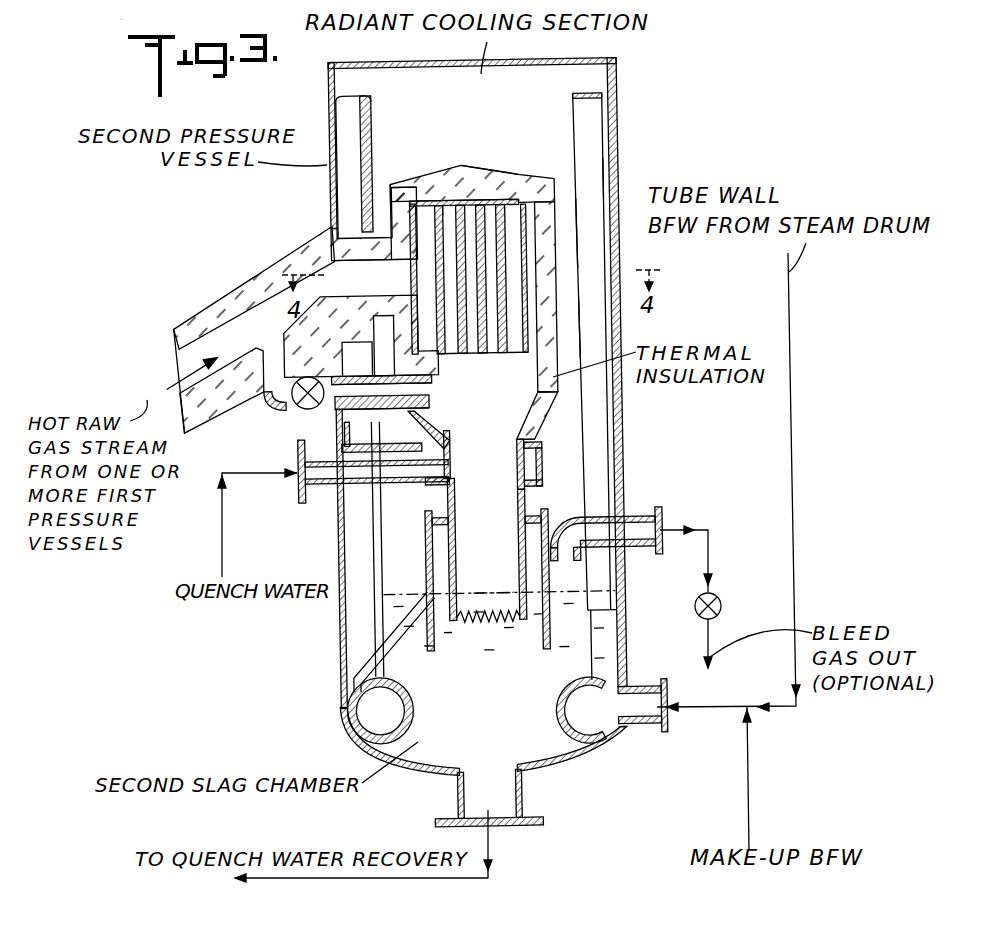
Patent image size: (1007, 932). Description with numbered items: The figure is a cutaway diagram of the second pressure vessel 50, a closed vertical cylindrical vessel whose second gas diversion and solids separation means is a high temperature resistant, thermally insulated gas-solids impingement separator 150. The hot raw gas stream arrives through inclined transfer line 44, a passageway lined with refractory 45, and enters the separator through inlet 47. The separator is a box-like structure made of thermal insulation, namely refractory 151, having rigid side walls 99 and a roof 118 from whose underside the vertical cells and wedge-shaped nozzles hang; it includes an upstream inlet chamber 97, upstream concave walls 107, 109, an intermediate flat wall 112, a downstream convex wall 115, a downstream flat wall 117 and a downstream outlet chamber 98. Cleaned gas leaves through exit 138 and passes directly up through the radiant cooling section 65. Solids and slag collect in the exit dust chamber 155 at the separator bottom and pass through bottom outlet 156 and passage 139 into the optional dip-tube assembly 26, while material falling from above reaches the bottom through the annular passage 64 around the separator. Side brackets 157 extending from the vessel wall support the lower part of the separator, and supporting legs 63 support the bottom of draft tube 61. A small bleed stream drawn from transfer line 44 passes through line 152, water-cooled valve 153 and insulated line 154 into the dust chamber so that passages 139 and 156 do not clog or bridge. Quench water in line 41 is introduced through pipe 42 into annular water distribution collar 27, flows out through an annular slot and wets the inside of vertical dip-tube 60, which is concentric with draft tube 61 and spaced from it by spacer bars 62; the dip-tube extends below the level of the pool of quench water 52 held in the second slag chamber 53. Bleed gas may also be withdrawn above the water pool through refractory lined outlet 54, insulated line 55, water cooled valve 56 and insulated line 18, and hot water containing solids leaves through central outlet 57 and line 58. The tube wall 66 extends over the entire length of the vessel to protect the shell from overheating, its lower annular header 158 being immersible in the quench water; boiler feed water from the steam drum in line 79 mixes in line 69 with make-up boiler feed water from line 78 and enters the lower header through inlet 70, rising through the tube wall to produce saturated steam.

The insulated line 18 is at (707, 631).
The dip-tube assembly 26 is at (460, 491).
The water distribution collar 27 is at (543, 474).
The quench water line 41 is at (222, 514).
The pipe 42 is at (318, 488).
The transfer line 44 is at (168, 384).
The refractory 45 is at (242, 293).
The inlet 47 is at (338, 265).
The second pressure vessel 50 is at (615, 127).
The pool of quench water 52 is at (535, 745).
The second slag chamber 53 is at (492, 561).
The refractory lined outlet 54 is at (640, 514).
The insulated line 55 is at (711, 552).
The water cooled valve 56 is at (720, 598).
The central outlet 57 is at (453, 792).
The line 58 is at (450, 877).
The vertical dip-tube 60 is at (515, 486).
The vertical draft tube 61 is at (427, 560).
The spacer bars 62 is at (432, 531).
The supporting legs 63 is at (393, 653).
The annular passage 64 is at (572, 342).
The radiant cooling section 65 is at (480, 164).
The tube wall 66 is at (597, 175).
The line 69 is at (680, 713).
The inlet 70 is at (641, 729).
The line 78 is at (752, 770).
The line 79 is at (791, 337).
The upstream vertical inlet chamber 97 is at (423, 231).
The downstream vertical outlet chamber 98 is at (565, 230).
The side walls 99 is at (565, 257).
The upstream vertical concave wall 107 is at (425, 213).
The upstream vertical concave wall 109 is at (510, 200).
The intermediate vertical flat wall 112 is at (456, 216).
The downstream vertical convex wall 115 is at (480, 216).
The downstream vertical flat wall 117 is at (527, 200).
The roof 118 is at (470, 208).
The exit 138 is at (538, 200).
The passage 139 is at (507, 372).
The gas-solids impingement separator 150 is at (448, 205).
The refractory 151 is at (617, 181).
The line 152 is at (273, 353).
The water-cooled valve 153 is at (293, 410).
The insulated line 154 is at (335, 412).
The exit dust chamber 155 is at (556, 394).
The bottom outlet 156 is at (541, 425).
The side brackets 157 is at (382, 423).
The lower annular header 158 is at (367, 712).